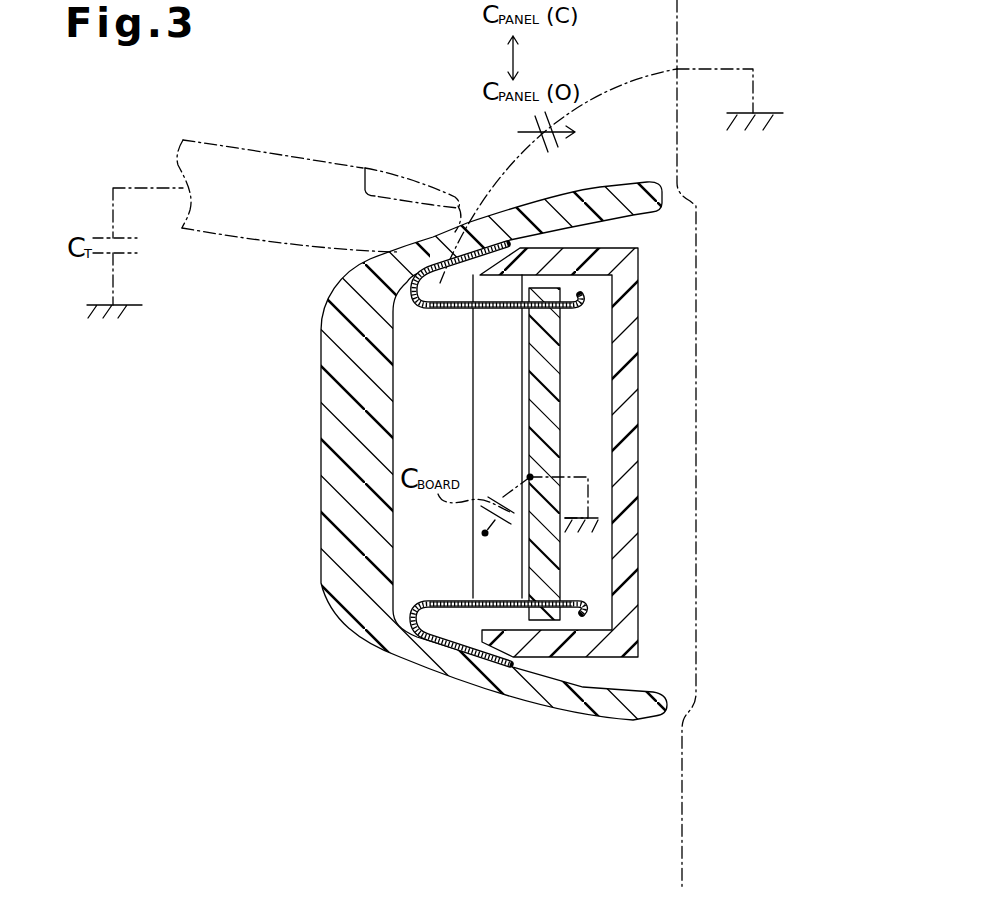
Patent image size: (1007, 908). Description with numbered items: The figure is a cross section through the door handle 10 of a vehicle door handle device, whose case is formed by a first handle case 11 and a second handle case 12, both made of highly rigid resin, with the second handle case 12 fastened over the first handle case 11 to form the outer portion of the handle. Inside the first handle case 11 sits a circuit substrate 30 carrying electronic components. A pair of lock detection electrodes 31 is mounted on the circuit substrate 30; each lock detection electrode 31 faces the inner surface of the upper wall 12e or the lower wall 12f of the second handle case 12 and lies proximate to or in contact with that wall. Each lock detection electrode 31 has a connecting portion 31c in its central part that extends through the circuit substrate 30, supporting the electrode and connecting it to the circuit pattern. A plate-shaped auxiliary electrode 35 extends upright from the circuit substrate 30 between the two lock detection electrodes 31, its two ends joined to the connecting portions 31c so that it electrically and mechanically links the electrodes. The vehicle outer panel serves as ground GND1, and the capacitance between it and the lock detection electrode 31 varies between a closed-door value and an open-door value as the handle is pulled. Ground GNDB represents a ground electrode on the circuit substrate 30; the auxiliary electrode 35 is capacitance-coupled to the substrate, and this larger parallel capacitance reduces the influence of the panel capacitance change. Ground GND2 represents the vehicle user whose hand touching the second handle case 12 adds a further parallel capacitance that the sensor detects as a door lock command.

The door handle 10 is at (249, 477).
The first handle case 11 is at (640, 336).
The second handle case 12 is at (320, 350).
The upper wall 12e is at (533, 208).
The lower wall 12f is at (530, 696).
The circuit substrate 30 is at (561, 446).
The lock detection electrode 31 is at (417, 308).
The connecting portion 31c is at (440, 312).
The auxiliary electrode 35 is at (472, 403).
The ground GND1 is at (767, 113).
The ground GND2 is at (128, 308).
The ground GNDB is at (597, 519).